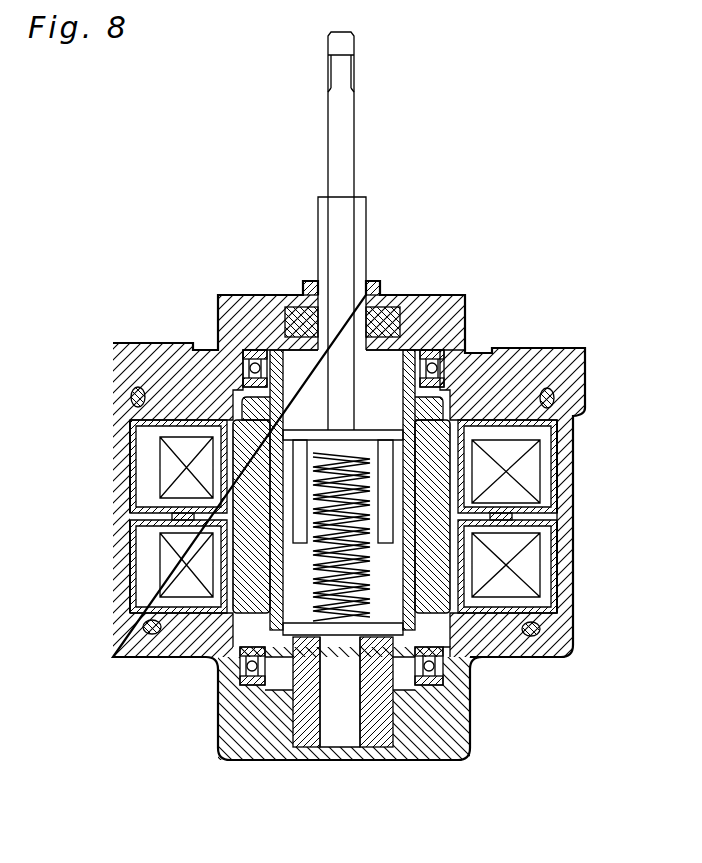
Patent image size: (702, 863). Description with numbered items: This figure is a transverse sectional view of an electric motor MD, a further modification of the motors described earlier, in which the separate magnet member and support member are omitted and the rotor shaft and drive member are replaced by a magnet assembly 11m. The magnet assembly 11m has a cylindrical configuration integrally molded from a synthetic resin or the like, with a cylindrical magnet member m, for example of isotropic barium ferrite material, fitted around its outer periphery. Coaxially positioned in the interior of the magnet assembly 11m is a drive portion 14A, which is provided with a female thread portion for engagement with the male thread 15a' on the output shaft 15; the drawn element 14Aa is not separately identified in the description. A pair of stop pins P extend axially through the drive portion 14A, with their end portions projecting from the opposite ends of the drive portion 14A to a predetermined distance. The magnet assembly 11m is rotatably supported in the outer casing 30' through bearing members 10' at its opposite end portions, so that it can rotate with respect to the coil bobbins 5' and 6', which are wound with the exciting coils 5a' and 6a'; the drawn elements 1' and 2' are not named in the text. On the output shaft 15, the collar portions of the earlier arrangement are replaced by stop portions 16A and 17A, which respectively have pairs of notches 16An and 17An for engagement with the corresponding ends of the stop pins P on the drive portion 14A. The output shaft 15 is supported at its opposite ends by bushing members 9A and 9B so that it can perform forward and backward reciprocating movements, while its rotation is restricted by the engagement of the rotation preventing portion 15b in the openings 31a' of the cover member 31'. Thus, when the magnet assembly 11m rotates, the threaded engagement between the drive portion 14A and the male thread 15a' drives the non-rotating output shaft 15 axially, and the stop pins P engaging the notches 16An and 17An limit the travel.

The output shaft 15 is at (345, 100).
The rotation preventing portion 15b is at (333, 213).
The male thread 15a' is at (326, 736).
The openings 31a' is at (378, 223).
The cover member 31' is at (383, 269).
The bushing member 9A is at (468, 300).
The bushing member 9B is at (398, 762).
The bearing members 10' is at (362, 516).
The stop portion 16A is at (437, 415).
The notches 16An is at (440, 411).
The cylindrical magnet member m is at (430, 485).
The electric motor MD is at (522, 212).
The coil bobbin 5' is at (343, 395).
The exciting coil 5a' is at (285, 470).
The upper stator 1' is at (295, 473).
The exciting coil 6a' is at (285, 565).
The lower stator 2' is at (295, 583).
The coil bobbin 6' is at (303, 603).
The stop pins P is at (230, 632).
The drive portion 14A is at (240, 640).
The spring seat 14Aa is at (382, 720).
The notches 17An is at (275, 685).
The stop portion 17A is at (470, 735).
The magnet assembly 11m is at (480, 657).
The outer casing 30' is at (381, 741).